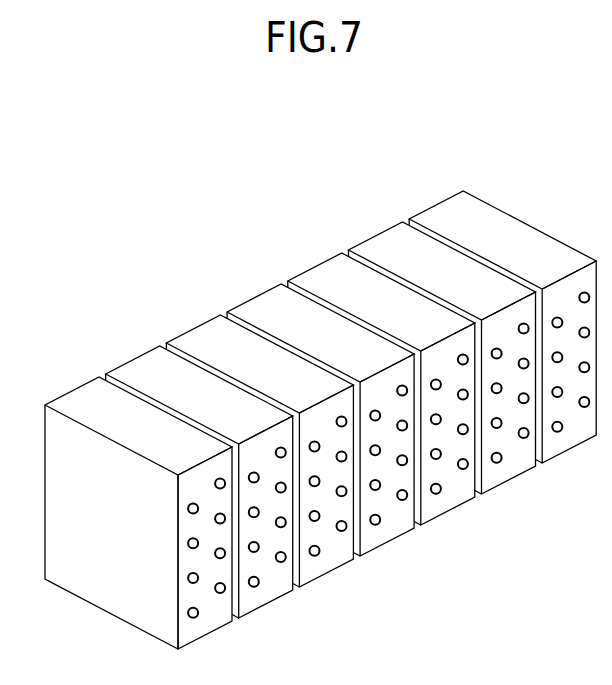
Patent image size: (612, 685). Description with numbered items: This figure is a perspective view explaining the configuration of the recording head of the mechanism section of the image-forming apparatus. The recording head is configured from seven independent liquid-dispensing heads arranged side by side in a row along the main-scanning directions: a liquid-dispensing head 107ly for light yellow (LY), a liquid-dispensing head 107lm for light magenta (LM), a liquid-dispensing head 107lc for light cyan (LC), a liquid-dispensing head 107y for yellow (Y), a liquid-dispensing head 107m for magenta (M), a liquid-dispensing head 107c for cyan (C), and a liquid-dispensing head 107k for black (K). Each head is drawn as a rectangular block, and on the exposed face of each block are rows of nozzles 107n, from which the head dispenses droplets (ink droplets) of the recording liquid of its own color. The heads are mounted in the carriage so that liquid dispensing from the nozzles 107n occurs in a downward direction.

The liquid-dispensing head 107ly is at (85, 405).
The liquid-dispensing head 107lm is at (146, 374).
The liquid-dispensing head 107lc is at (206, 343).
The liquid-dispensing head 107y is at (267, 312).
The liquid-dispensing head 107m is at (328, 281).
The liquid-dispensing head 107c is at (388, 250).
The liquid-dispensing head 107k is at (449, 219).
The nozzle 107n is at (259, 585).